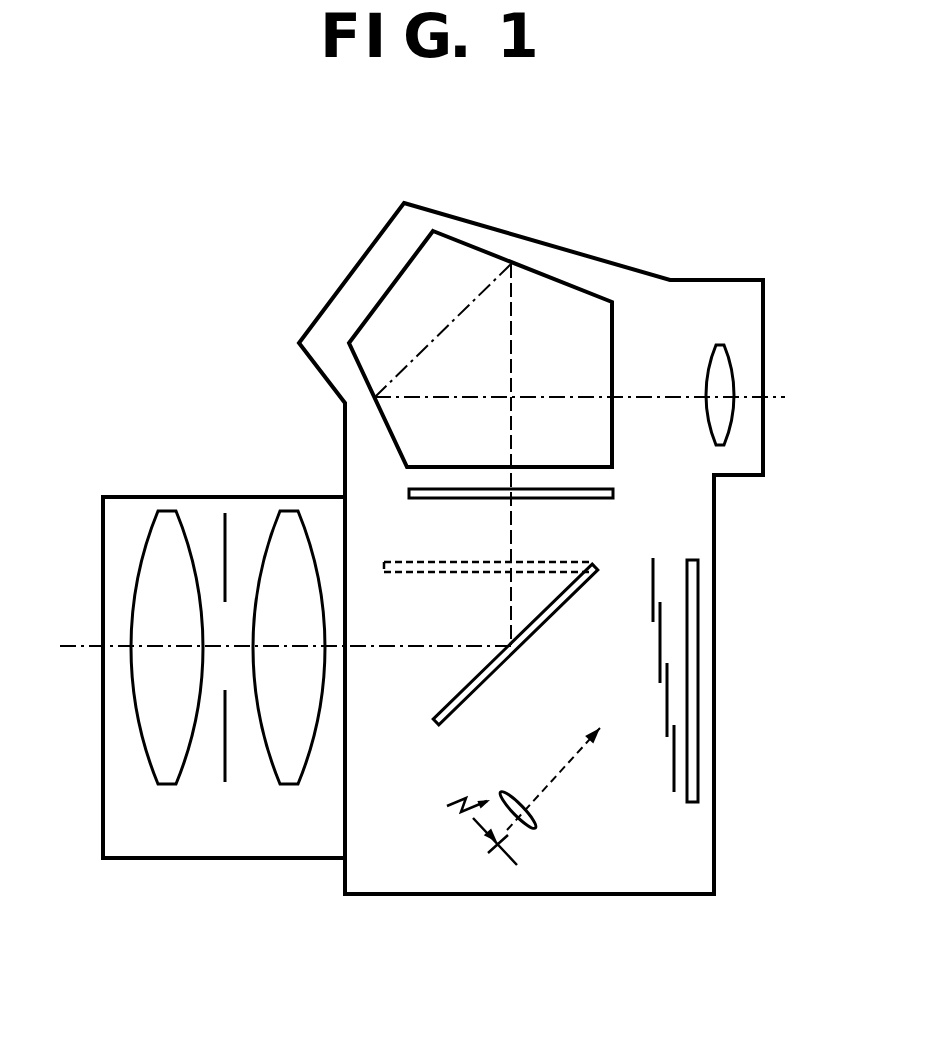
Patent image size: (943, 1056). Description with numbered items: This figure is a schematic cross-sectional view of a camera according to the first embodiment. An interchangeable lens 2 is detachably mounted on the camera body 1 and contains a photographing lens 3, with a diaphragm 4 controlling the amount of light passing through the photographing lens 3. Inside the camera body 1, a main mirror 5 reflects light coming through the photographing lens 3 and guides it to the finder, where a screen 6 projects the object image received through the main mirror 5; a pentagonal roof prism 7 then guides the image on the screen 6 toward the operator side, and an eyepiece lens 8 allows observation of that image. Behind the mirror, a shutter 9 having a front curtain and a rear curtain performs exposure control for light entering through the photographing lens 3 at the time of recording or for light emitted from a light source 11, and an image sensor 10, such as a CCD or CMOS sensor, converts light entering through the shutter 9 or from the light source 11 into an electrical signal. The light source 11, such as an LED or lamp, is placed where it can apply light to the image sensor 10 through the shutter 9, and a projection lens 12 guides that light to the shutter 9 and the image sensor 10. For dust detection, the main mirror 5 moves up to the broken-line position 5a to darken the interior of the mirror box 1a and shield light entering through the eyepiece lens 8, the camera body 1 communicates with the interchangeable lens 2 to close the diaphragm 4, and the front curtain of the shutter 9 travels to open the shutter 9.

The camera body 1 is at (362, 258).
The mirror box 1a is at (607, 677).
The interchangeable lens 2 is at (102, 748).
The photographing lens 3 is at (299, 487).
The diaphragm 4 is at (225, 770).
The main mirror 5 is at (485, 688).
The position of the main mirror 5a is at (390, 558).
The screen 6 is at (414, 488).
The pentagonal roof prism 7 is at (360, 317).
The eyepiece lens 8 is at (732, 360).
The shutter 9 is at (656, 566).
The image sensor 10 is at (700, 640).
The light source 11 is at (497, 843).
The projection lens 12 is at (538, 815).